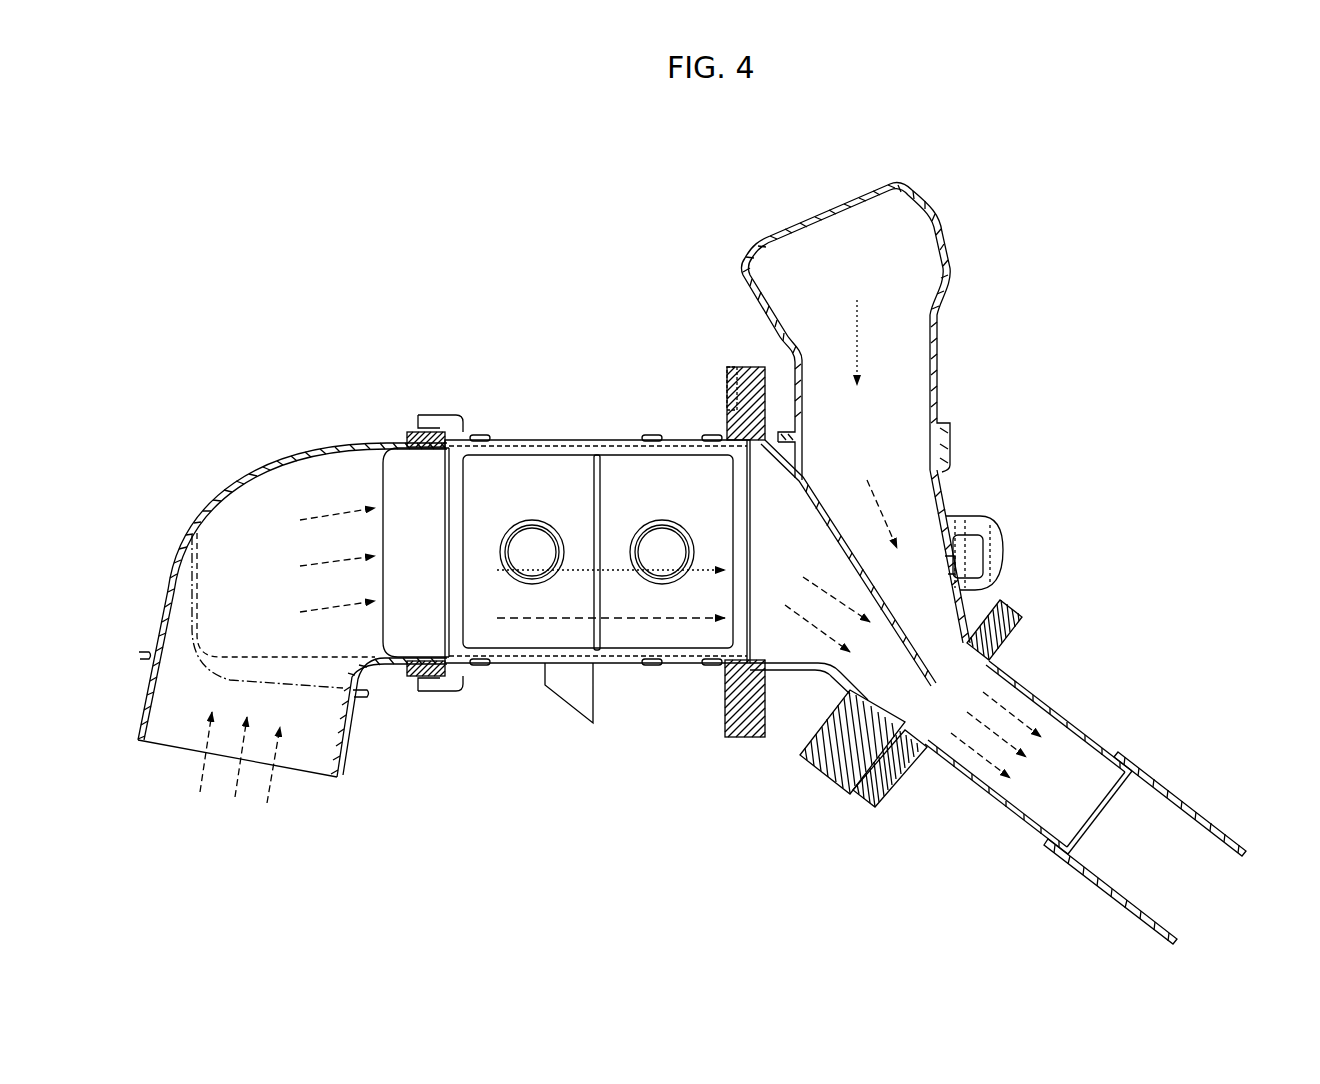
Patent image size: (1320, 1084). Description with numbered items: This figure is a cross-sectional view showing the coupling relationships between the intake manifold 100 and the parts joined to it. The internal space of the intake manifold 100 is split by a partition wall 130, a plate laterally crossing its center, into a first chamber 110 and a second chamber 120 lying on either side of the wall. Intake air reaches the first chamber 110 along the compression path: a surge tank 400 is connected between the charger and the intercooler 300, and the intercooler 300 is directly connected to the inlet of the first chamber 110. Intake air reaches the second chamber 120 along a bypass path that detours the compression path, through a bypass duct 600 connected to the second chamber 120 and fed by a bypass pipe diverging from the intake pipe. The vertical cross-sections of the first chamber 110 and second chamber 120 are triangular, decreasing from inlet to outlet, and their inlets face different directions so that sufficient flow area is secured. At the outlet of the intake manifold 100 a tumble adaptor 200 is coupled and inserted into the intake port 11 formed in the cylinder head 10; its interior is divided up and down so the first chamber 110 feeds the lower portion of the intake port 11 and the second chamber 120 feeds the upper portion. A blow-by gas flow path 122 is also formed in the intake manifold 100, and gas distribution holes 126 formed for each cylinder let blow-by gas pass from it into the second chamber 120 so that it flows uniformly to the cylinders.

The cylinder head 10 is at (1159, 805).
The intake port 11 is at (1193, 808).
The intake manifold 100 is at (938, 591).
The first chamber 110 is at (778, 555).
The second chamber 120 is at (922, 585).
The blow-by gas flow path 122 is at (973, 553).
The gas distribution holes 126 is at (988, 588).
The partition wall 130 is at (840, 537).
The tumble adaptor 200 is at (1035, 800).
The intercooler 300 is at (515, 630).
The surge tank 400 is at (240, 487).
The bypass duct 600 is at (945, 233).